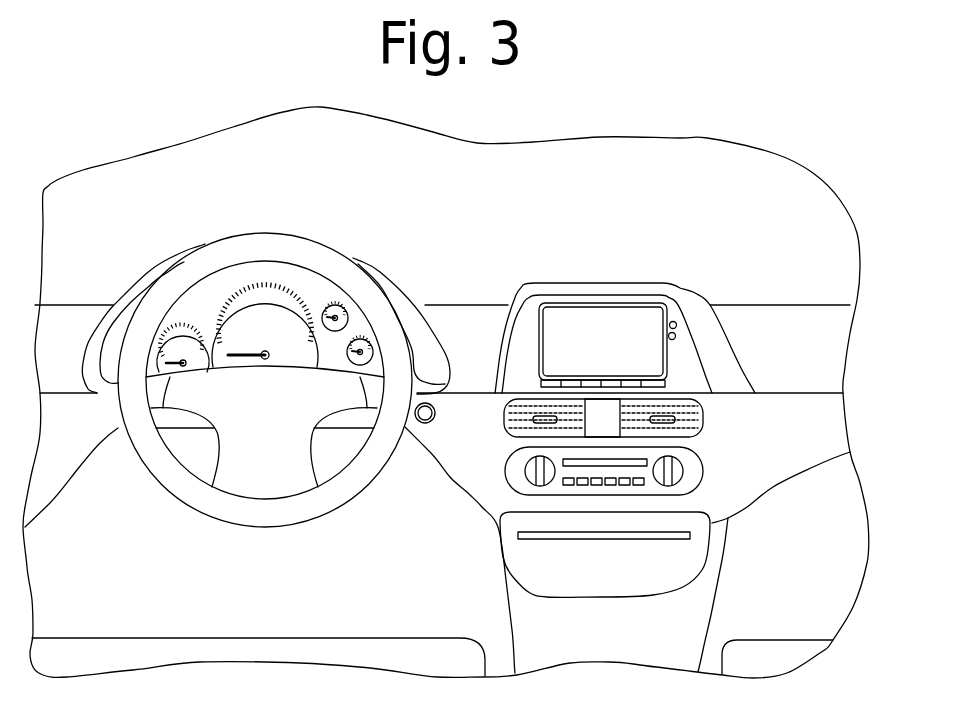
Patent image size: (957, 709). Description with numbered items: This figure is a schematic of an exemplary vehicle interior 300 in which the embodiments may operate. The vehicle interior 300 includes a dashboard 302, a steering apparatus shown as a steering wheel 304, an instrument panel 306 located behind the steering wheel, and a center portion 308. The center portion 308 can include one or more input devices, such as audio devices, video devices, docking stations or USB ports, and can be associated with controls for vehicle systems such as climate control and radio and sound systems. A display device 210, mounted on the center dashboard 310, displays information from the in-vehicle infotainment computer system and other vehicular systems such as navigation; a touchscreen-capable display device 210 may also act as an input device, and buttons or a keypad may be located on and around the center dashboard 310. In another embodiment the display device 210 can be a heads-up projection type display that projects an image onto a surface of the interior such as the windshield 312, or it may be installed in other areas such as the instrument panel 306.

The vehicle interior 300 is at (812, 173).
The dashboard 302 is at (462, 325).
The steering wheel 304 is at (207, 258).
The instrument panel 306 is at (275, 283).
The center portion 308 is at (487, 455).
The center dashboard 310 is at (675, 270).
The windshield 312 is at (357, 222).
The display device 210 is at (606, 302).